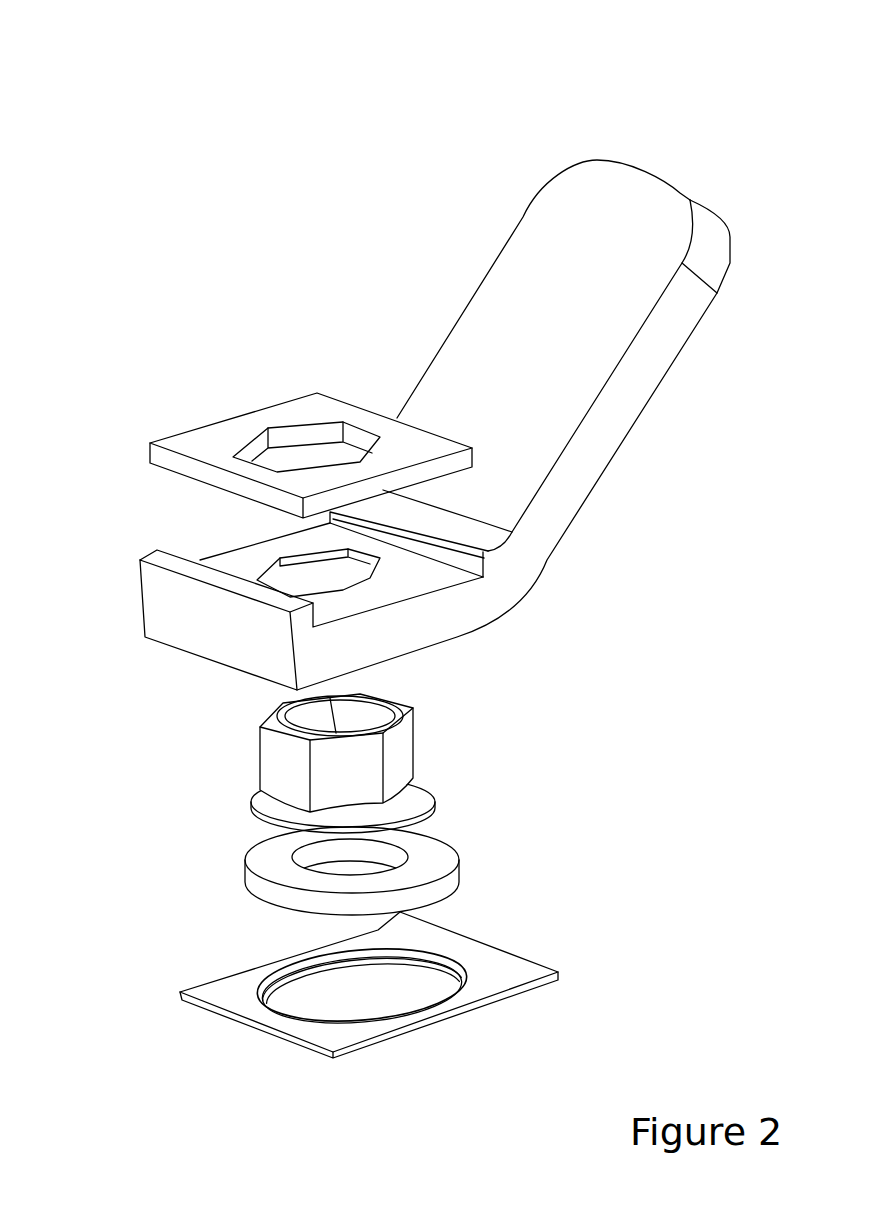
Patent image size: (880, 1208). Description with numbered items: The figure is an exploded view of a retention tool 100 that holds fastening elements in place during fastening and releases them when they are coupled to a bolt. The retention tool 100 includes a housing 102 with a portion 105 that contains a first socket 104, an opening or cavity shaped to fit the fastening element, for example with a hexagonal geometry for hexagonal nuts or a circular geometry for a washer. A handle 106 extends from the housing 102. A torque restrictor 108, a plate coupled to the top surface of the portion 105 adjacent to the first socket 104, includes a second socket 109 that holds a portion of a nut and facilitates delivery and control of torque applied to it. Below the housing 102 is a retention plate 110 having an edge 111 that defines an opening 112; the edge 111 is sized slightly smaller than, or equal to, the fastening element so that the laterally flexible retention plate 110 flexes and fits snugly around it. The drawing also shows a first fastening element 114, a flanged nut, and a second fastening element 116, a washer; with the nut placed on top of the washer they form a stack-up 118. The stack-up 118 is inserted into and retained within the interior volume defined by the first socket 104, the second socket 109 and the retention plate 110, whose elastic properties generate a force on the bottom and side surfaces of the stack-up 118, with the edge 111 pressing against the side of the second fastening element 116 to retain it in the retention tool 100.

The retention tool 100 is at (640, 96).
The housing 102 is at (487, 520).
The first socket 104 is at (323, 585).
The portion 105 is at (310, 648).
The handle 106 is at (492, 328).
The torque restrictor 108 is at (215, 460).
The second socket 109 is at (307, 427).
The retention plate 110 is at (497, 960).
The edge 111 is at (397, 963).
The opening 112 is at (355, 990).
The first fastening element 114 is at (402, 757).
The second fastening element 116 is at (433, 852).
The stack-up 118 is at (215, 850).